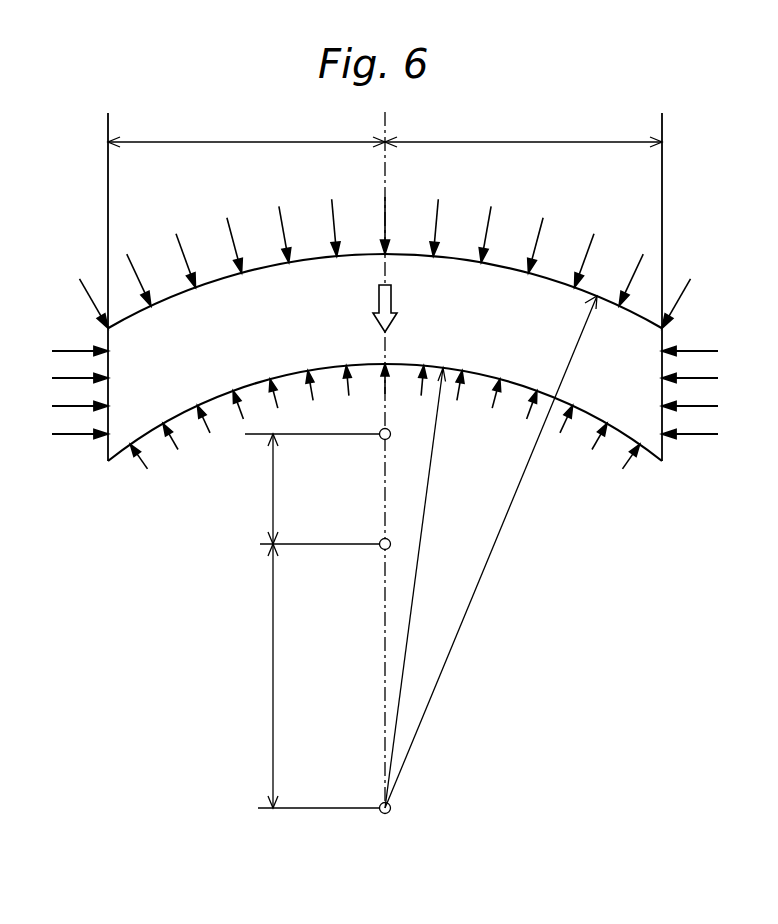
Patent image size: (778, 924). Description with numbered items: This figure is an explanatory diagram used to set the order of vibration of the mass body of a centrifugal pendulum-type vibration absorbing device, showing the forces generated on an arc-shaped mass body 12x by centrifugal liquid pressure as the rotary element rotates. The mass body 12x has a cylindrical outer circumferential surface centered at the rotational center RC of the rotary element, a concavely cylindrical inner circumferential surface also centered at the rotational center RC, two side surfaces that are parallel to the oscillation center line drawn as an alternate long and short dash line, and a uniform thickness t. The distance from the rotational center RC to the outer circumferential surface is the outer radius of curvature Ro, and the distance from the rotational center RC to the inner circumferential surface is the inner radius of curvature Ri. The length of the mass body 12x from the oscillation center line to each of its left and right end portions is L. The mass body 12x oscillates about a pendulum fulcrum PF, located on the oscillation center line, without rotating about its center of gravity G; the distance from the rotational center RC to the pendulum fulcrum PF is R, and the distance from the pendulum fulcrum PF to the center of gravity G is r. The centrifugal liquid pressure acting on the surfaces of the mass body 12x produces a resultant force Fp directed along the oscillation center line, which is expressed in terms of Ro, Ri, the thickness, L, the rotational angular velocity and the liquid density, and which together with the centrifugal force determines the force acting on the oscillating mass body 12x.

The mass body 12x is at (100, 452).
The length of the mass body from the oscillation center line to left and right end p L is at (385, 131).
The force generated by the centrifugal liquid pressure Fp is at (404, 308).
The center of gravity G is at (379, 437).
The pendulum fulcrum PF is at (379, 547).
The distance from the pendulum fulcrum to the center of gravity r is at (260, 489).
The distance from the rotational center to the pendulum fulcrum R is at (311, 676).
The rotational center RC is at (390, 812).
The inner radius of curvature Ri is at (415, 588).
The outer radius of curvature Ro is at (491, 552).